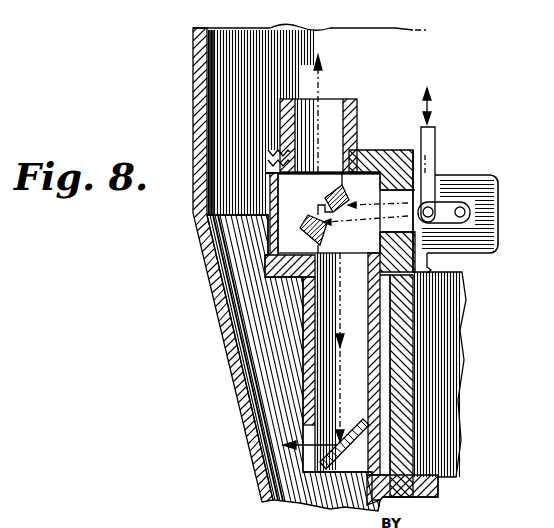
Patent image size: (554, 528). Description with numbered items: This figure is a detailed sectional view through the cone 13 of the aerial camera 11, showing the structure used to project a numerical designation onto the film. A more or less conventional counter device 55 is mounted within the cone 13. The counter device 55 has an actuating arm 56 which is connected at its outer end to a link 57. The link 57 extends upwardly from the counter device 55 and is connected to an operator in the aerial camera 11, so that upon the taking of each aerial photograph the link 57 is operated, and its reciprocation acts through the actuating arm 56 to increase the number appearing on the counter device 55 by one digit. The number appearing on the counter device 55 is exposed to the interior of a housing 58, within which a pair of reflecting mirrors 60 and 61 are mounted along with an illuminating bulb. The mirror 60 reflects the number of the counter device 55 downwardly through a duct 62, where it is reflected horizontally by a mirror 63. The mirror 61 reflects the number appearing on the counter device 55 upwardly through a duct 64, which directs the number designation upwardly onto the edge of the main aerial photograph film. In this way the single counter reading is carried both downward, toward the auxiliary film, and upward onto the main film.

The aerial camera 11 is at (190, 92).
The cone 13 is at (221, 332).
The counter device 55 is at (500, 183).
The actuating arm 56 is at (447, 201).
The link 57 is at (435, 138).
The housing 58 is at (378, 150).
The mirror 60 is at (325, 197).
The mirror 61 is at (304, 224).
The duct 62 is at (303, 392).
The mirror 63 is at (329, 472).
The duct 64 is at (358, 108).